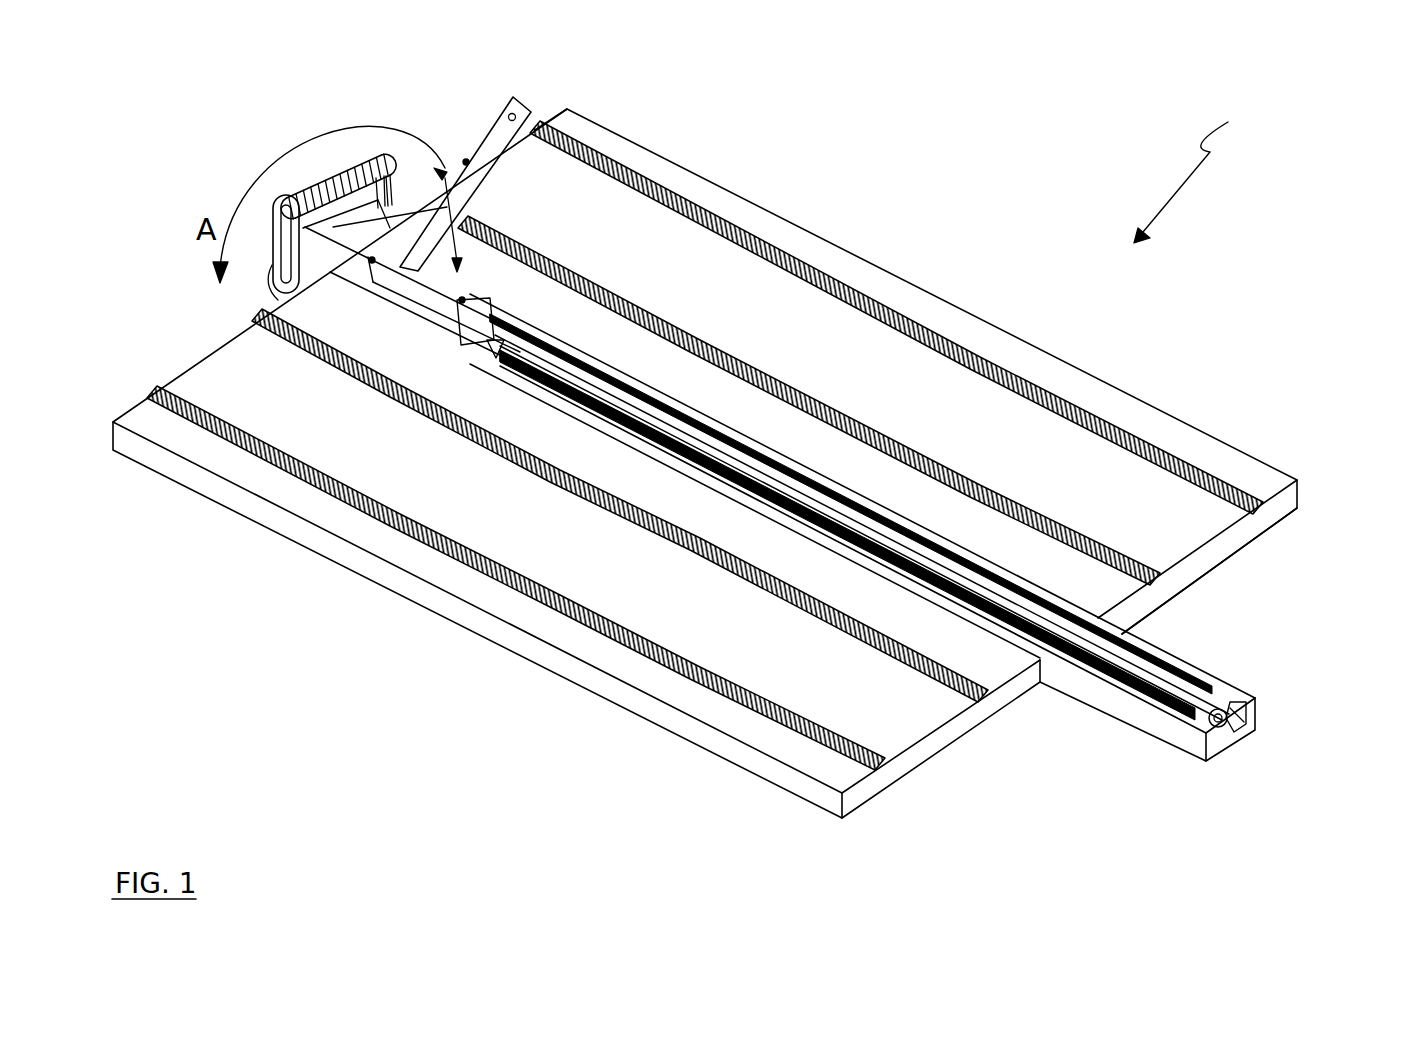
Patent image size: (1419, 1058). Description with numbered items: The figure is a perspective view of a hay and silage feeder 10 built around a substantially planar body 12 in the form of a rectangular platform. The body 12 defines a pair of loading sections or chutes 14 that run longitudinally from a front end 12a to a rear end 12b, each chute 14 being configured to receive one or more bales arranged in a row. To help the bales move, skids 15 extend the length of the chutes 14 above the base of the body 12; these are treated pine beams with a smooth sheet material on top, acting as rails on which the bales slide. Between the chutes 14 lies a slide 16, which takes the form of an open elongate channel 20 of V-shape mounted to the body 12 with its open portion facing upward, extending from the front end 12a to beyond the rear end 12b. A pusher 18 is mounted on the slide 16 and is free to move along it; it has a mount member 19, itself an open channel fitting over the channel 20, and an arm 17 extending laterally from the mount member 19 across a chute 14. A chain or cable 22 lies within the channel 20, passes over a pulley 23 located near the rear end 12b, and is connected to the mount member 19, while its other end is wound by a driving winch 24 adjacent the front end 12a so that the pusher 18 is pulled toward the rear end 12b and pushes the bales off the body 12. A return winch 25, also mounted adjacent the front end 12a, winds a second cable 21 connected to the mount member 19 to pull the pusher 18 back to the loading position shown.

The hay and silage feeder 10 is at (1202, 169).
The body 12 is at (1205, 434).
The front end 12a is at (553, 110).
The rear end 12b is at (1248, 546).
The chute 14 is at (705, 451).
The skid 15 is at (830, 280).
The slide 16 is at (1060, 690).
The arm 17 is at (465, 158).
The pusher 18 is at (470, 250).
The mount member 19 is at (400, 302).
The elongate channel 20 is at (1258, 703).
The second cable 21 is at (178, 288).
The chain or cable 22 is at (607, 372).
The pulley 23 is at (1228, 693).
The driving winch 24 is at (382, 205).
The return winch 25 is at (323, 176).